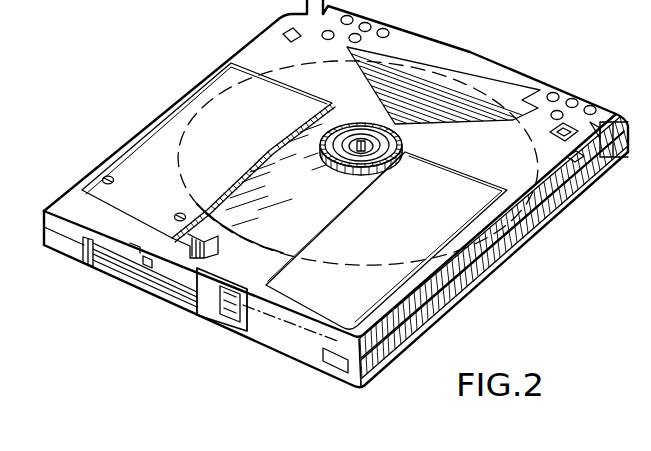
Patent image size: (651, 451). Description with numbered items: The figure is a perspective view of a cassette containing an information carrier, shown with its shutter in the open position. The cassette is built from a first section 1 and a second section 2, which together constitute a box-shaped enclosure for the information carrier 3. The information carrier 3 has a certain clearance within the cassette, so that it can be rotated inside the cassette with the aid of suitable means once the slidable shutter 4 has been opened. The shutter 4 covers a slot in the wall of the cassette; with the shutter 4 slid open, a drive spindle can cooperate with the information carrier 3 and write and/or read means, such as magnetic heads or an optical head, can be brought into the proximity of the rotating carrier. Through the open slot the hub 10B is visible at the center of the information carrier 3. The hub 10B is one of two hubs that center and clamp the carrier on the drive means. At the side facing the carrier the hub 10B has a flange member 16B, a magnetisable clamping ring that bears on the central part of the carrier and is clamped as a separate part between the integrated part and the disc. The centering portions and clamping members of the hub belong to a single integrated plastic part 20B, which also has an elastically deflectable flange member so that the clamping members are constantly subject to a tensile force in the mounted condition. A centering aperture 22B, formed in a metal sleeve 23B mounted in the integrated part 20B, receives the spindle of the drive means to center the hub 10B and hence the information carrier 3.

The first section 1 is at (77, 205).
The second section 2 is at (60, 244).
The information carrier 3 is at (400, 152).
The shutter 4 is at (403, 277).
The hub 10B is at (398, 141).
The flange member 16B is at (333, 140).
The integrated plastic part 20B is at (383, 153).
The centering aperture 22B is at (361, 147).
The metal sleeve 23B is at (383, 158).